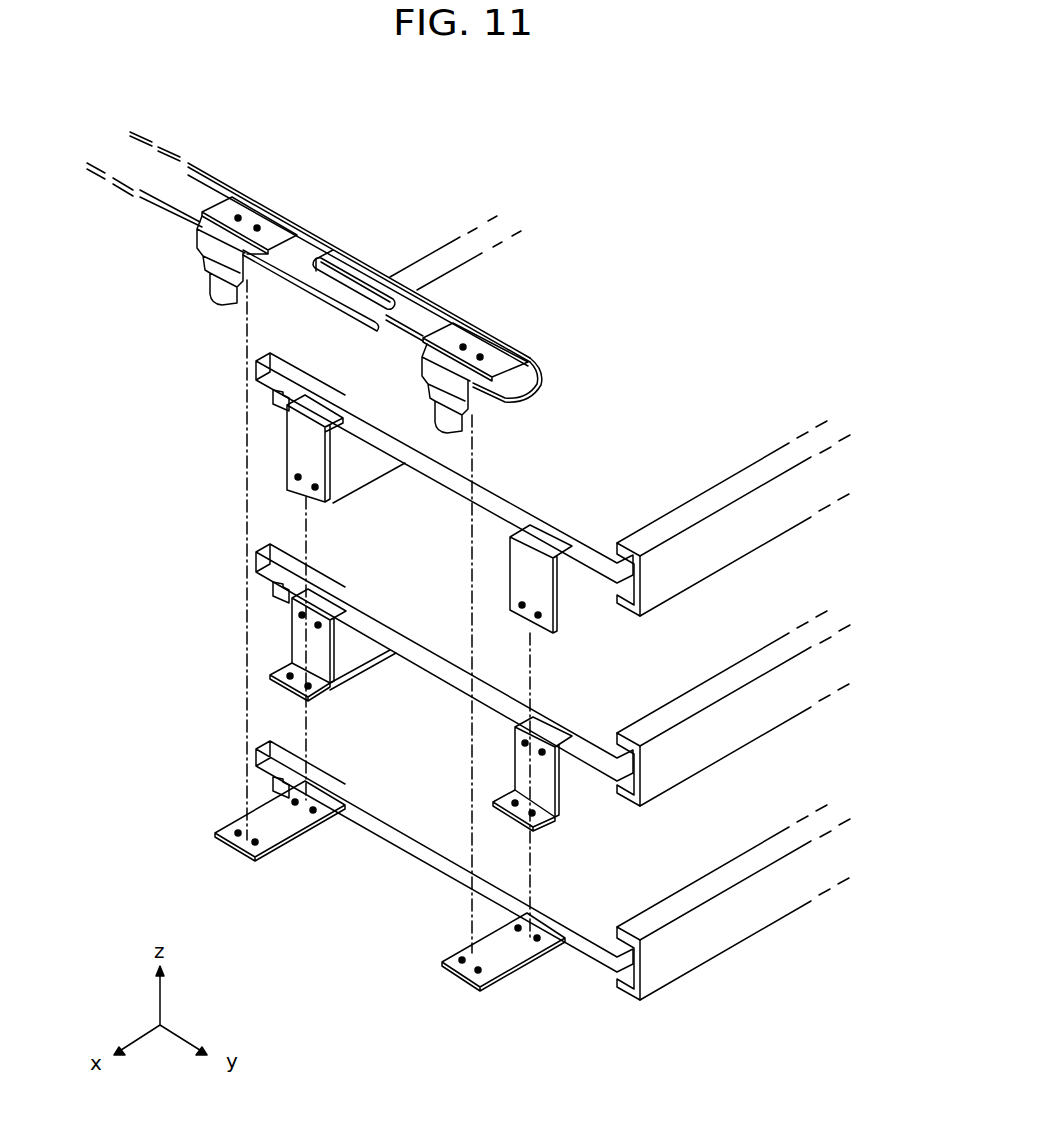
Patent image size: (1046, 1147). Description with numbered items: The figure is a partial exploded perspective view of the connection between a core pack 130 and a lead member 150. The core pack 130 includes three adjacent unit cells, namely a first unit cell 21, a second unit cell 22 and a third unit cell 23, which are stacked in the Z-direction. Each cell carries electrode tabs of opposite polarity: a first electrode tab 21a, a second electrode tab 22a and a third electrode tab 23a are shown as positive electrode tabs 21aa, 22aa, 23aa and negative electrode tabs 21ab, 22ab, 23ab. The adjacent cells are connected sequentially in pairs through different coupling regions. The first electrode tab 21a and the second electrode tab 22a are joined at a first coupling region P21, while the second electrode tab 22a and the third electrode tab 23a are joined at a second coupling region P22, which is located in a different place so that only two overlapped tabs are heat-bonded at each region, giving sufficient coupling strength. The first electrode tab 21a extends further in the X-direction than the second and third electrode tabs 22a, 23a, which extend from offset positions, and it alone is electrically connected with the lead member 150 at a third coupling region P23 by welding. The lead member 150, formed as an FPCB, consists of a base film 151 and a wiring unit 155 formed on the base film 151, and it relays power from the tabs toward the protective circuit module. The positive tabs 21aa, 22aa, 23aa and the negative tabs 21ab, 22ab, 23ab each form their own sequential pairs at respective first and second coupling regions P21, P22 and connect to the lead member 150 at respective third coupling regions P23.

The core pack 130 is at (688, 252).
The lead member 150 is at (620, 387).
The base film 151 is at (545, 372).
The wiring unit 155 is at (530, 360).
The third unit cell 23 is at (708, 555).
The third electrode tab 23a is at (474, 533).
The negative electrode tab of the third unit cell 23ab is at (333, 500).
The positive electrode tab of the third unit cell 23aa is at (557, 600).
The second unit cell 22 is at (730, 733).
The second electrode tab 22a is at (459, 734).
The negative electrode tab of the second unit cell 22ab is at (323, 697).
The positive electrode tab of the second unit cell 22aa is at (555, 820).
The first unit cell 21 is at (730, 937).
The first electrode tab 21a is at (401, 916).
The negative electrode tab of the first unit cell 21ab is at (265, 857).
The positive electrode tab of the first unit cell 21aa is at (503, 977).
The first coupling region P21 is at (540, 941).
The second coupling region P22 is at (545, 757).
The third coupling region P23 is at (440, 953).